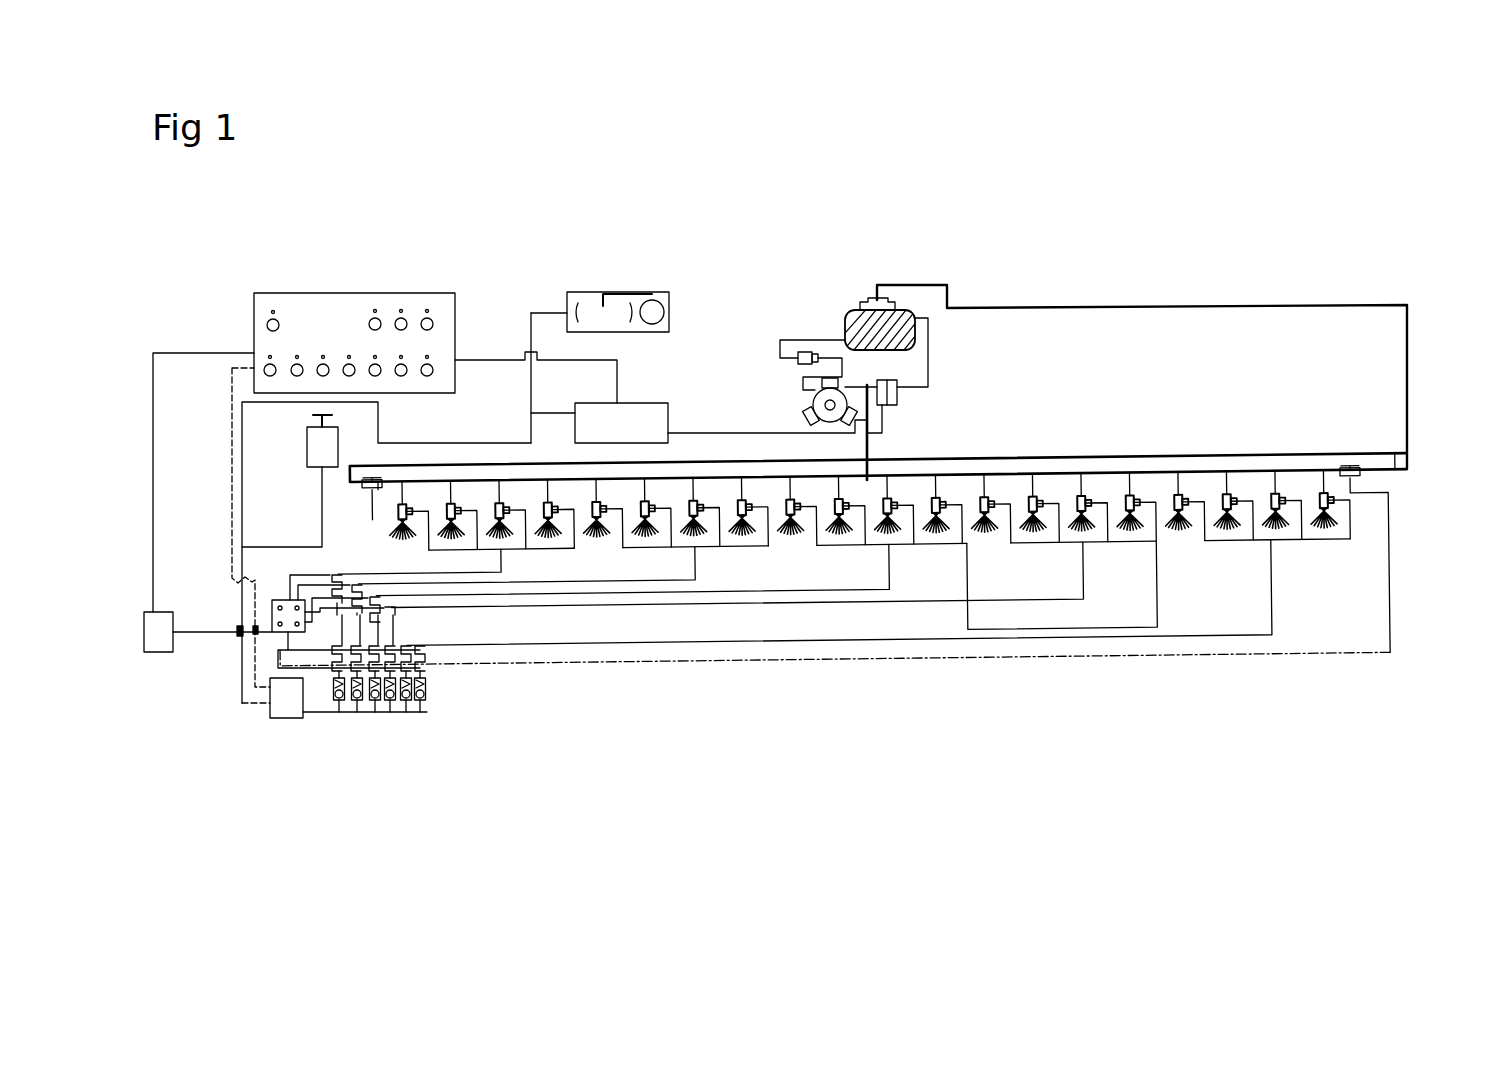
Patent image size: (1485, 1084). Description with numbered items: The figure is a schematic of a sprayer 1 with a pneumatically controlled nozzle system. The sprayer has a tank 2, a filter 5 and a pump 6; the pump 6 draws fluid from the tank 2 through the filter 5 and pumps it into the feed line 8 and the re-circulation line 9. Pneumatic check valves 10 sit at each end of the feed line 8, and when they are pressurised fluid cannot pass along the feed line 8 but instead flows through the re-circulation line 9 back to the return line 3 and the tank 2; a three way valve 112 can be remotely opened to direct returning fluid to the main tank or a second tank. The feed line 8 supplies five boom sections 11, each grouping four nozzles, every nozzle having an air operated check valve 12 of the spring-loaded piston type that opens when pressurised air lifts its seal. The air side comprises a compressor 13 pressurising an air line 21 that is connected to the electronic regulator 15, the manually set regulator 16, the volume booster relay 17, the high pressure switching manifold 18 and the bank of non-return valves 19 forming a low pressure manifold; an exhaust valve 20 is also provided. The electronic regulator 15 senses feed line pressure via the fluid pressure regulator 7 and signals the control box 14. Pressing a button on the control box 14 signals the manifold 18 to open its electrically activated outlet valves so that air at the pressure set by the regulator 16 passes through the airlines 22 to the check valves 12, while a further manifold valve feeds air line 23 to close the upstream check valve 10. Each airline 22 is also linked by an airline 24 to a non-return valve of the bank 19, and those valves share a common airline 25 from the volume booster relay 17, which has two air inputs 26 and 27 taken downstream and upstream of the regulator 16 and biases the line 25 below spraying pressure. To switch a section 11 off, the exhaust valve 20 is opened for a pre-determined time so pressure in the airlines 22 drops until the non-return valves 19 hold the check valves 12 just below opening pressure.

The sprayer 1 is at (908, 238).
The tank 2 is at (897, 318).
The return line 3 is at (1262, 303).
The filter 5 is at (816, 352).
The pump 6 is at (818, 393).
The fluid pressure regulator 7 is at (895, 398).
The feed line 8 is at (715, 433).
The re-circulation line 9 is at (1338, 443).
The pneumatic check valves 10 is at (1358, 480).
The boom sections 11 is at (530, 557).
The air operated check valve 12 is at (797, 515).
The compressor 13 is at (605, 290).
The control box 14 is at (337, 307).
The electronic regulator 15 is at (635, 403).
The manually set regulator 16 is at (334, 443).
The volume booster relay 17 is at (283, 713).
The high pressure switching manifold 18 is at (283, 617).
The bank of non-return valves 19 is at (385, 740).
The exhaust valve 20 is at (157, 612).
The air line 21 is at (528, 332).
The airlines 22 is at (475, 652).
The air line 23 is at (645, 670).
The airline 24 is at (357, 588).
The common airline 25 is at (313, 740).
The air input 26 is at (318, 507).
The air input 27 is at (247, 457).
The three way valve 112 is at (1412, 442).